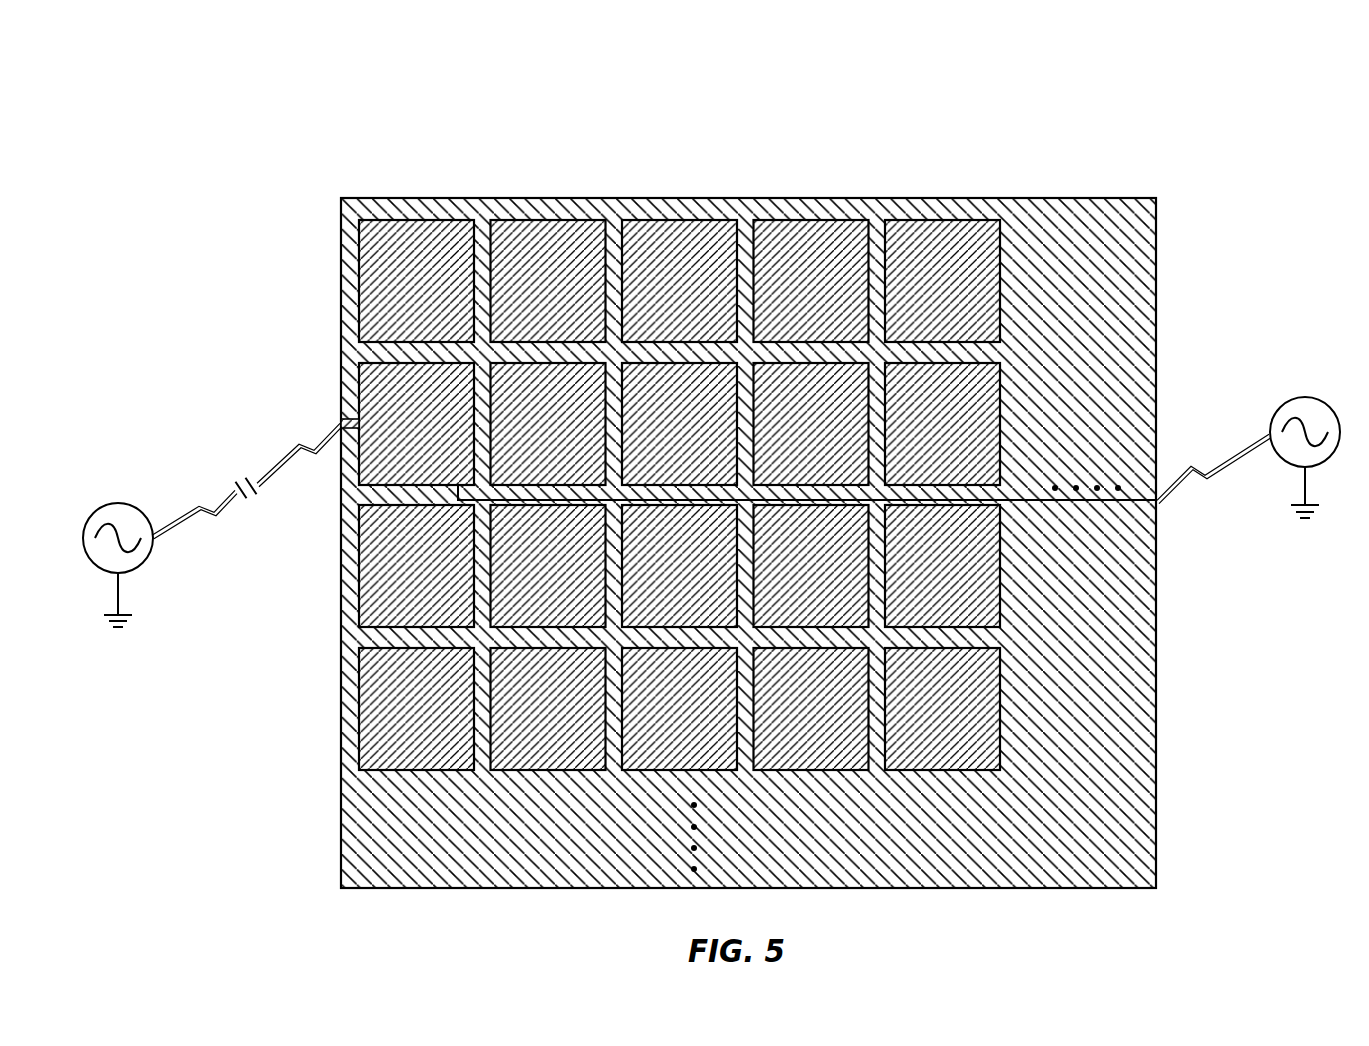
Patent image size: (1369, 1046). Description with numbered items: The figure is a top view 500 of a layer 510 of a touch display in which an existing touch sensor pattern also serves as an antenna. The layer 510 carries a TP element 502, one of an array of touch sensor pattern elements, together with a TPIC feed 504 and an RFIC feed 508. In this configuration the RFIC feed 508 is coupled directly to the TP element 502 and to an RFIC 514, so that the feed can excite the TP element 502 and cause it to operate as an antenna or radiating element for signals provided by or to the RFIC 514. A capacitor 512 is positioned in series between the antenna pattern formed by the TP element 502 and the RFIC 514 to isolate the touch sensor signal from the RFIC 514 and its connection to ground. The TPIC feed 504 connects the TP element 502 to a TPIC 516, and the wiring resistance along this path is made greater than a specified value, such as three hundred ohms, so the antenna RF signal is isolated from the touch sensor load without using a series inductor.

The top view 500 is at (138, 118).
The TP element 502 is at (359, 375).
The TPIC feed 504 is at (1160, 503).
The RFIC feed 508 is at (341, 422).
The layer 510 is at (340, 835).
The capacitor 512 is at (249, 497).
The RFIC 514 is at (118, 542).
The TPIC 516 is at (1248, 433).